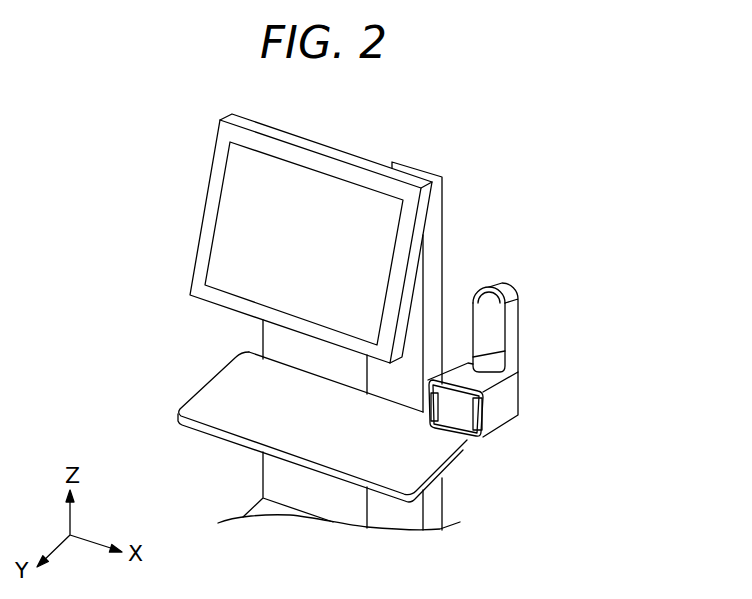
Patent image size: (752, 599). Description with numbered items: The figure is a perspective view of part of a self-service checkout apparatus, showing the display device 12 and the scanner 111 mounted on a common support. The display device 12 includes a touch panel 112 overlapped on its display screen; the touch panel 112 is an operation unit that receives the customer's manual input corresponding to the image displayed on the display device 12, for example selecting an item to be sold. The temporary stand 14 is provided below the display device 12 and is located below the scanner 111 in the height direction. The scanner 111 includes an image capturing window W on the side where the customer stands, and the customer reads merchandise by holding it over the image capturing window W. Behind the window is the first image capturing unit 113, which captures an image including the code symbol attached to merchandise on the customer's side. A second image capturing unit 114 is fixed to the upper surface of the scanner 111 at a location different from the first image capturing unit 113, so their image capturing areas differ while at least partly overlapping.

The display device 12 is at (348, 203).
The touch panel 112 is at (358, 228).
The temporary stand 14 is at (353, 426).
The scanner 111 is at (478, 380).
The second image capturing unit 114 is at (488, 302).
The first image capturing unit 113 is at (457, 408).
The image capturing window W is at (446, 436).